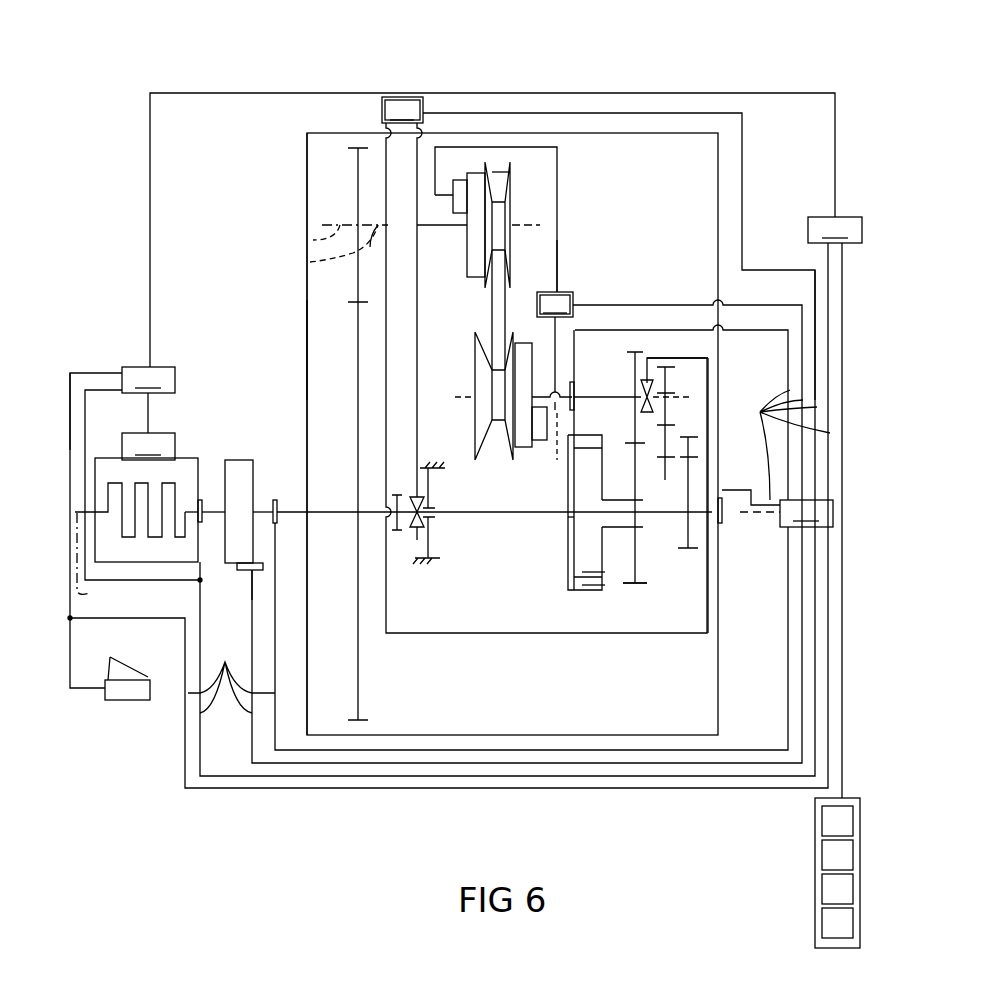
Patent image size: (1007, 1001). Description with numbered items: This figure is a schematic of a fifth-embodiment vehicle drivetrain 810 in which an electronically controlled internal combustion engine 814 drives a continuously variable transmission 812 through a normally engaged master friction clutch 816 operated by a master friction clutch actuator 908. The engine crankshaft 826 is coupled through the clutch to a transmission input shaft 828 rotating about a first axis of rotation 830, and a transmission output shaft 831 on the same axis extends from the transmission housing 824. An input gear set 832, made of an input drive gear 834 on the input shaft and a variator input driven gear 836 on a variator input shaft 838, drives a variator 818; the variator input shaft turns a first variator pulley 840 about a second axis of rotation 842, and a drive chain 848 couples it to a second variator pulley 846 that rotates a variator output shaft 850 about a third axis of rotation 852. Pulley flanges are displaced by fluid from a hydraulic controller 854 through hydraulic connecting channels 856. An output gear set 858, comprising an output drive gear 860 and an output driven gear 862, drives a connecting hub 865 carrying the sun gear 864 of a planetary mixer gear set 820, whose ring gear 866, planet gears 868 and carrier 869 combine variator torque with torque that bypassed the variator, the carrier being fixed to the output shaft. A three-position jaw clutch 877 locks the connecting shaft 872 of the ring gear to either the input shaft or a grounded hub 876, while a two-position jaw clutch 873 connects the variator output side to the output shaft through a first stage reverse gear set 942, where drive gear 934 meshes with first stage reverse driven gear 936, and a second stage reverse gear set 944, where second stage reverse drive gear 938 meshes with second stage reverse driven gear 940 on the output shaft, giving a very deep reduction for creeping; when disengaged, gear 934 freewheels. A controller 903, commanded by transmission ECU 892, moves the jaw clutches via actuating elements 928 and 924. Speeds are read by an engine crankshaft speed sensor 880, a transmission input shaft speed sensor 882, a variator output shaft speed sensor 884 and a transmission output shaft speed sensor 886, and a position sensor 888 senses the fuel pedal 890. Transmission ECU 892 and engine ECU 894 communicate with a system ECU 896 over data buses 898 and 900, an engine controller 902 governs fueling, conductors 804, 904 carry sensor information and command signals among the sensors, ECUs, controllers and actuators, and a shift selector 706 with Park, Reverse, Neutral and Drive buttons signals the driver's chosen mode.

The vehicle drivetrain 810 is at (604, 70).
The data bus 900 is at (762, 95).
The controller 903 is at (507, 436).
The transmission housing 824 is at (307, 186).
The continuously variable transmission 812 is at (296, 163).
The input drive gear 834 is at (307, 345).
The variator input driven gear 836 is at (355, 277).
The input gear set 832 is at (342, 138).
The second axis of rotation 842 is at (322, 230).
The variator input shaft 838 is at (322, 265).
The first variator pulley 840 is at (512, 180).
The hydraulic connecting channels 856 is at (524, 242).
The variator 818 is at (555, 250).
The drive chain 848 is at (485, 312).
The hydraulic controller 854 is at (527, 527).
The first stage reverse gear set 942 is at (643, 322).
The system ECU 896 is at (466, 507).
The data bus 898 is at (812, 268).
The engine ECU 894 is at (135, 493).
The conductors 804 is at (71, 385).
The engine controller 902 is at (148, 446).
The internal combustion engine 814 is at (113, 448).
The engine crankshaft 826 is at (193, 490).
The engine crankshaft speed sensor 880 is at (201, 498).
The master friction clutch 816 is at (243, 458).
The transmission input shaft speed sensor 882 is at (275, 498).
The transmission input shaft 828 is at (328, 515).
The master friction clutch actuator 908 is at (240, 572).
The first axis of rotation 830 is at (95, 598).
The position sensor 888 is at (115, 700).
The fuel pedal 890 is at (140, 677).
The conductors 904 is at (509, 551).
The actuating element 924 is at (470, 633).
The actuating element 928 is at (413, 400).
The connecting shaft 872 is at (445, 508).
The grounded hub 876 is at (430, 525).
The three-position jaw clutch 877 is at (413, 530).
The second variator pulley 846 is at (472, 450).
The variator output shaft 850 is at (545, 448).
The third axis of rotation 852 is at (462, 390).
The variator output shaft speed sensor 884 is at (585, 395).
The output drive gear 860 is at (633, 365).
The output driven gear 862 is at (630, 455).
The jaw clutch 873 is at (650, 356).
The first stage reverse drive gear 934 is at (670, 383).
The first stage reverse driven gear 936 is at (668, 430).
The second stage reverse drive gear 938 is at (692, 450).
The connecting hub 865 is at (620, 500).
The ring gear 866 is at (568, 523).
The sun gear 864 is at (583, 555).
The carrier 869 is at (583, 580).
The planet gears 868 is at (600, 585).
The output gear set 858 is at (650, 595).
The planetary mixer gear set 820 is at (568, 603).
The transmission output shaft 831 is at (715, 485).
The transmission ECU 892 is at (786, 513).
The transmission output shaft speed sensor 886 is at (722, 525).
The second stage reverse driven gear 940 is at (690, 540).
The second stage reverse gear set 944 is at (690, 560).
The shift selector 706 is at (815, 866).